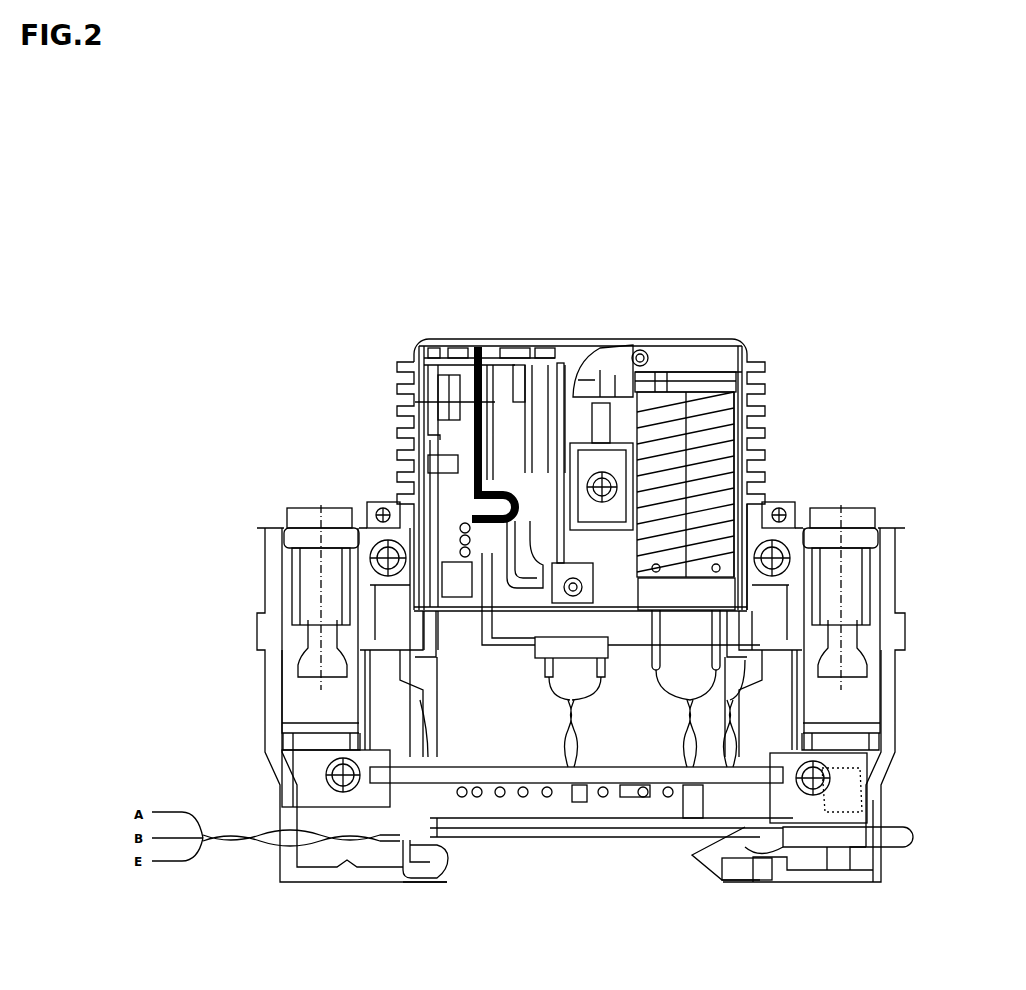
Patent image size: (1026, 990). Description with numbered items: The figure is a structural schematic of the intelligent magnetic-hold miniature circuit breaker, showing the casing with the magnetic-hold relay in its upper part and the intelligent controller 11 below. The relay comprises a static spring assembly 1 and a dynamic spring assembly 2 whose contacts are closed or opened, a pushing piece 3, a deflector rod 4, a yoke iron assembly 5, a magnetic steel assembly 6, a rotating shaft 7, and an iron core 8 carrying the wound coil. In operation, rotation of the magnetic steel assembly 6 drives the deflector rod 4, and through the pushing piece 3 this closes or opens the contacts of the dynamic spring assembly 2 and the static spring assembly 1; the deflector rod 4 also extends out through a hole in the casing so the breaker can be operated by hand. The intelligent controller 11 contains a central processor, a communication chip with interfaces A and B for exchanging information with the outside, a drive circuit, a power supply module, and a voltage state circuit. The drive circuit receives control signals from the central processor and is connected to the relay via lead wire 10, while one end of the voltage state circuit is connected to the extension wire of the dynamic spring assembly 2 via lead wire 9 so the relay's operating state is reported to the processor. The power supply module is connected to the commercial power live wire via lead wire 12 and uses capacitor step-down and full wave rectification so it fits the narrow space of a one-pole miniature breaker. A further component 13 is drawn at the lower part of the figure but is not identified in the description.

The static spring assembly 1 is at (410, 472).
The dynamic spring assembly 2 is at (500, 352).
The pushing piece 3 is at (560, 352).
The deflector rod 4 is at (573, 385).
The yoke iron assembly 5 is at (617, 365).
The magnetic steel assembly 6 is at (763, 355).
The rotating shaft 7 is at (765, 407).
The iron core 8 is at (763, 470).
The lead wire 9 is at (735, 742).
The lead wire 10 is at (668, 640).
The intelligent controller 11 is at (640, 762).
The lead wire 12 is at (423, 765).
The contact block 13 is at (567, 685).